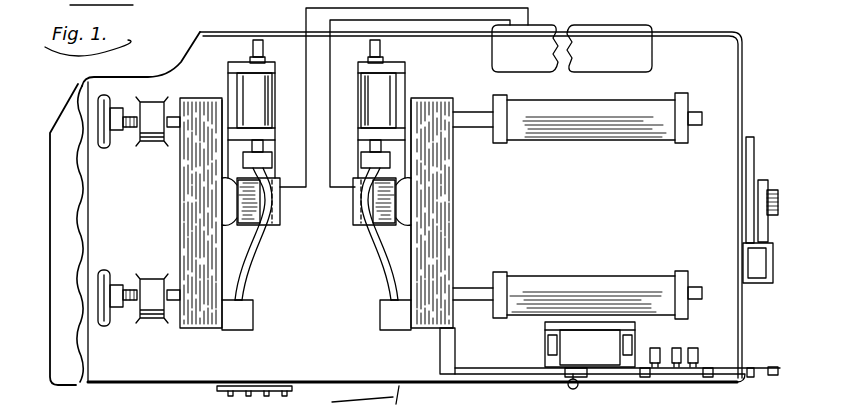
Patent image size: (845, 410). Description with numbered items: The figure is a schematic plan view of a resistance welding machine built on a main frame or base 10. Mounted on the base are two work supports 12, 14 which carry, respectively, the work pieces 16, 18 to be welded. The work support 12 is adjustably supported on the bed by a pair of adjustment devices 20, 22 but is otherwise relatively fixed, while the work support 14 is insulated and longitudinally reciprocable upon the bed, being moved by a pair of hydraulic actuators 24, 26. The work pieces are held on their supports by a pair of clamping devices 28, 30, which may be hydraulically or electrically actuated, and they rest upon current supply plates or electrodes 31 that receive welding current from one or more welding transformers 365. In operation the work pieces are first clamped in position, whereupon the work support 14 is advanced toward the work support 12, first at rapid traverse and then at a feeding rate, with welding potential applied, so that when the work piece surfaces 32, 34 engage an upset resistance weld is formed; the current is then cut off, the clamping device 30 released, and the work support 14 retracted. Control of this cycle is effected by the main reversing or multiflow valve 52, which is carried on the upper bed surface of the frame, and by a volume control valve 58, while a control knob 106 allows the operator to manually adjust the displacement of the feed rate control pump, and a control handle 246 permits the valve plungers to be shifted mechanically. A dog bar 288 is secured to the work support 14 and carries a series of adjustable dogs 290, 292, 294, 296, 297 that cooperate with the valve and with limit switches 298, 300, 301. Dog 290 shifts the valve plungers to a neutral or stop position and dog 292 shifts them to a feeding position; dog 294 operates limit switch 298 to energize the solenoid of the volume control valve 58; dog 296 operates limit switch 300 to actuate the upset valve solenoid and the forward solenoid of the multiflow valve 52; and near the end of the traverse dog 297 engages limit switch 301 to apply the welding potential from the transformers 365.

The main frame or base 10 is at (735, 153).
The work support 12 is at (196, 197).
The work support 14 is at (447, 243).
The work piece 16 is at (253, 240).
The work piece 18 is at (383, 249).
The adjustment device 20 is at (103, 150).
The adjustment device 22 is at (106, 270).
The hydraulic actuator 24 is at (566, 136).
The hydraulic actuator 26 is at (578, 282).
The clamping device 28 is at (248, 86).
The clamping device 30 is at (385, 88).
The current supply plate or electrode 31 is at (250, 202).
The work piece surface 32 is at (279, 193).
The work piece surface 34 is at (357, 200).
The main reversing or multiflow valve 52 is at (568, 346).
The volume control valve 58 is at (776, 276).
The control knob 106 is at (780, 209).
The control handle 246 is at (568, 388).
The dog bar 288 is at (462, 372).
The dog 290 is at (592, 380).
The dog 292 is at (646, 380).
The dog 294 is at (751, 380).
The dog 296 is at (790, 366).
The dog 297 is at (709, 380).
The limit switch 298 is at (681, 349).
The limit switch 300 is at (700, 353).
The limit switch 301 is at (655, 348).
The welding transformer 365 is at (638, 56).